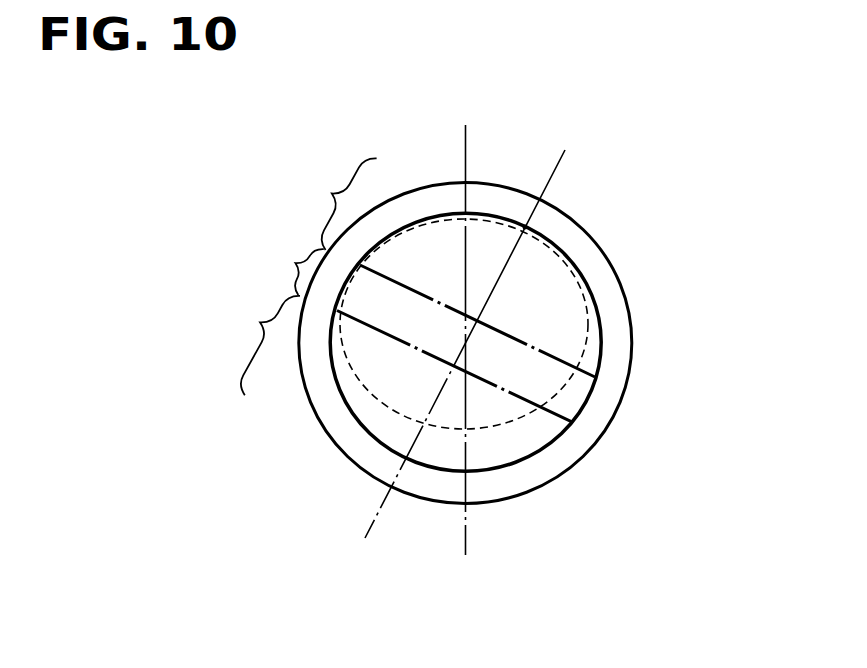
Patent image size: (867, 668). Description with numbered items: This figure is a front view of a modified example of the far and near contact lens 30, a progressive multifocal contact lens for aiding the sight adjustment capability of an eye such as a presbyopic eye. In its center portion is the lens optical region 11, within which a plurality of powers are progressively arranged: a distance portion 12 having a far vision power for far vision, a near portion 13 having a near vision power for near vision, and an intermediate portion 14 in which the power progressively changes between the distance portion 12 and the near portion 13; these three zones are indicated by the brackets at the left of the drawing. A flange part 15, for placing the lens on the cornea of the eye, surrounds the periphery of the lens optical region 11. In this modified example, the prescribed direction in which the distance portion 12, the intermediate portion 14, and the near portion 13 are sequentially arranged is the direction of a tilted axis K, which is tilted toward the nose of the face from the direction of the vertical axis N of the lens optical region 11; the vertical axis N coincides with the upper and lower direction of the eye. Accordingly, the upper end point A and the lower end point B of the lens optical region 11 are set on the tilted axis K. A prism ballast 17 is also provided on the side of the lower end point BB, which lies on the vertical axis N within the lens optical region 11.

The far and near contact lens 30 is at (539, 343).
The lens optical region 11 is at (601, 337).
The flange part 15 is at (609, 406).
The prism ballast 17 is at (493, 455).
The distance portion 12 is at (327, 190).
The intermediate portion 14 is at (288, 260).
The near portion 13 is at (249, 332).
The vertical axis N is at (466, 163).
The tilted axis K is at (557, 163).
The upper end point A is at (528, 225).
The lower end point B is at (401, 460).
The lower end point on the vertical axis BB is at (469, 476).